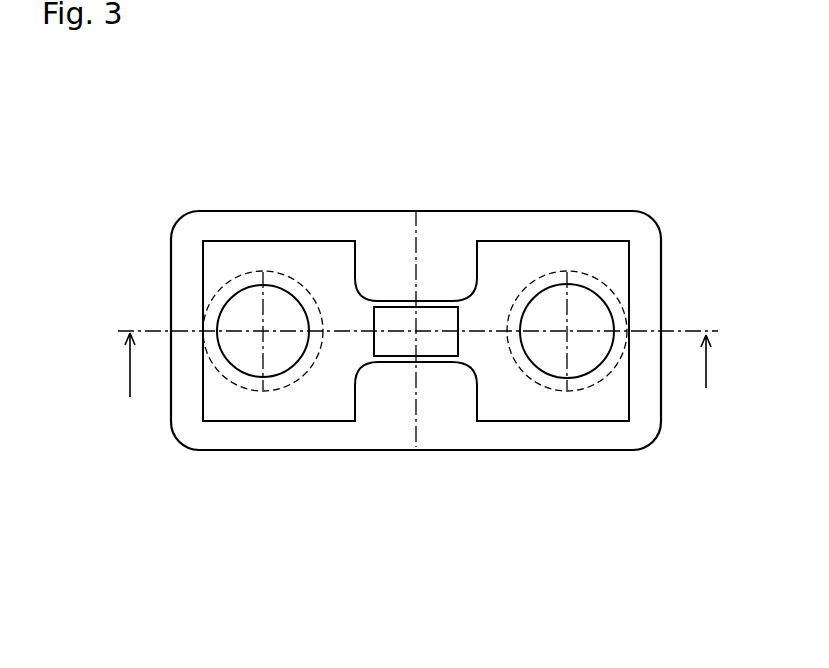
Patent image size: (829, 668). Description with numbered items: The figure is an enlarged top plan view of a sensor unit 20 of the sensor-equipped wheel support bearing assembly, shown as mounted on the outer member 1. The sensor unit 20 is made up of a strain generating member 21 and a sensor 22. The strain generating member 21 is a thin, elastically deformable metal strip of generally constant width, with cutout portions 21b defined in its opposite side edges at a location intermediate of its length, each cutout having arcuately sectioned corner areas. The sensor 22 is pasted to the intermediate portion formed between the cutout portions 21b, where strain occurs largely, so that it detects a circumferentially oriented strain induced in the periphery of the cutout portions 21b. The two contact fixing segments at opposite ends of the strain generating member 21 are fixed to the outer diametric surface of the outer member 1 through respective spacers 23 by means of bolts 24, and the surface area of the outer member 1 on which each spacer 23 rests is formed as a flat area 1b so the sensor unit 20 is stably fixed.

The outer member 1 is at (742, 170).
The flat area 1b is at (387, 250).
The sensor unit 20 is at (345, 230).
The strain generating member 21 is at (508, 270).
The cutout portions 21b is at (435, 301).
The sensor 22 is at (402, 343).
The spacer 23 is at (237, 278).
The bolt 24 is at (250, 357).